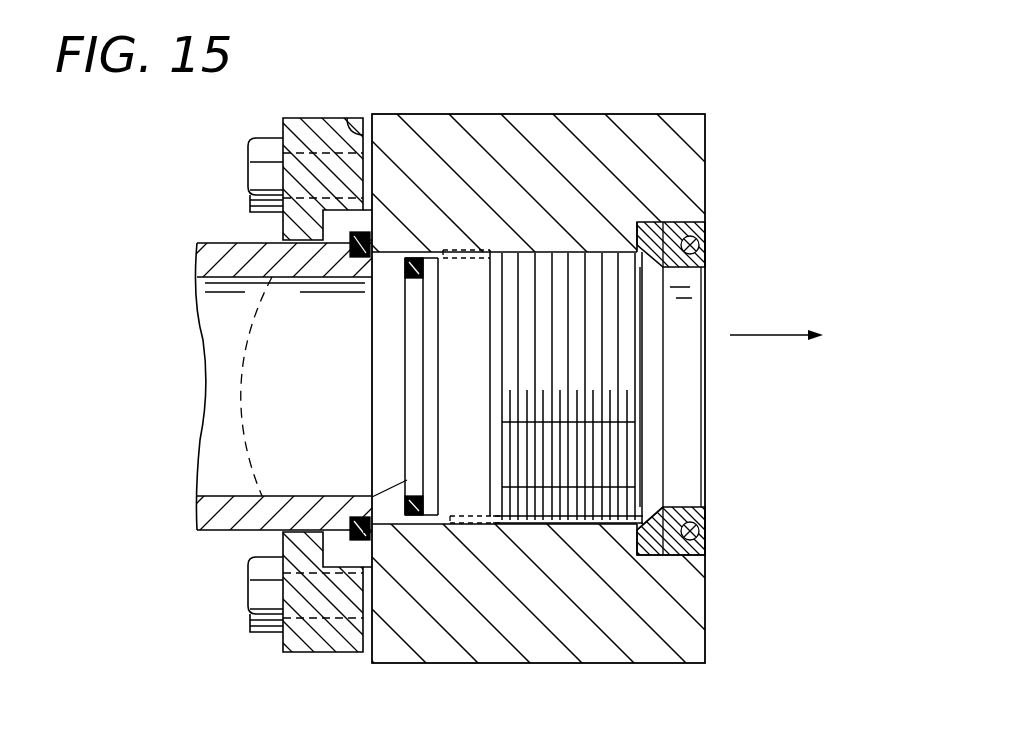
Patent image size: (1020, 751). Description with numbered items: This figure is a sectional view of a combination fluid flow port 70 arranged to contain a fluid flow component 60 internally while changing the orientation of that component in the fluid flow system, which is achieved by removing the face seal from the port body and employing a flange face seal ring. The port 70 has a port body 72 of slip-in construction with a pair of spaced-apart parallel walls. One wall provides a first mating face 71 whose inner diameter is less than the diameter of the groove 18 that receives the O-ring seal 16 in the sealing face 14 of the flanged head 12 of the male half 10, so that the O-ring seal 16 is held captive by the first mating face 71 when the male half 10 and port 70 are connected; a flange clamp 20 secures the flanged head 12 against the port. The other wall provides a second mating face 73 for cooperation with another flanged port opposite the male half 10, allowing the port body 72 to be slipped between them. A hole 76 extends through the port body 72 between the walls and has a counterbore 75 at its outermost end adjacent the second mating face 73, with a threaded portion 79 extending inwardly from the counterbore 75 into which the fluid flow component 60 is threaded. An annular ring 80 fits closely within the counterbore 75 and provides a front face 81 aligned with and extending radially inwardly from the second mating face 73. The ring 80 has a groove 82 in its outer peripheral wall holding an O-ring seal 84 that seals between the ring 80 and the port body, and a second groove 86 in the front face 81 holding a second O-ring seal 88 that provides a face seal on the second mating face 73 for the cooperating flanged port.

The male half 10 is at (211, 190).
The flanged head 12 is at (197, 262).
The sealing face 14 is at (372, 552).
The O-ring seal 16 is at (357, 268).
The groove 18 is at (358, 250).
The flange clamp 20 is at (307, 637).
The fluid flow component 60 is at (448, 373).
The port 70 is at (632, 97).
The first mating face 71 is at (347, 118).
The port body 72 is at (518, 113).
The second mating face 73 is at (705, 140).
The counterbore 75 is at (640, 553).
The hole 76 is at (368, 412).
The threaded portion 79 is at (470, 513).
The annular ring 80 is at (703, 515).
The front face 81 is at (702, 250).
The groove 82 is at (688, 505).
The O-ring seal 84 is at (663, 550).
The second groove 86 is at (702, 287).
The second O-ring seal 88 is at (708, 240).